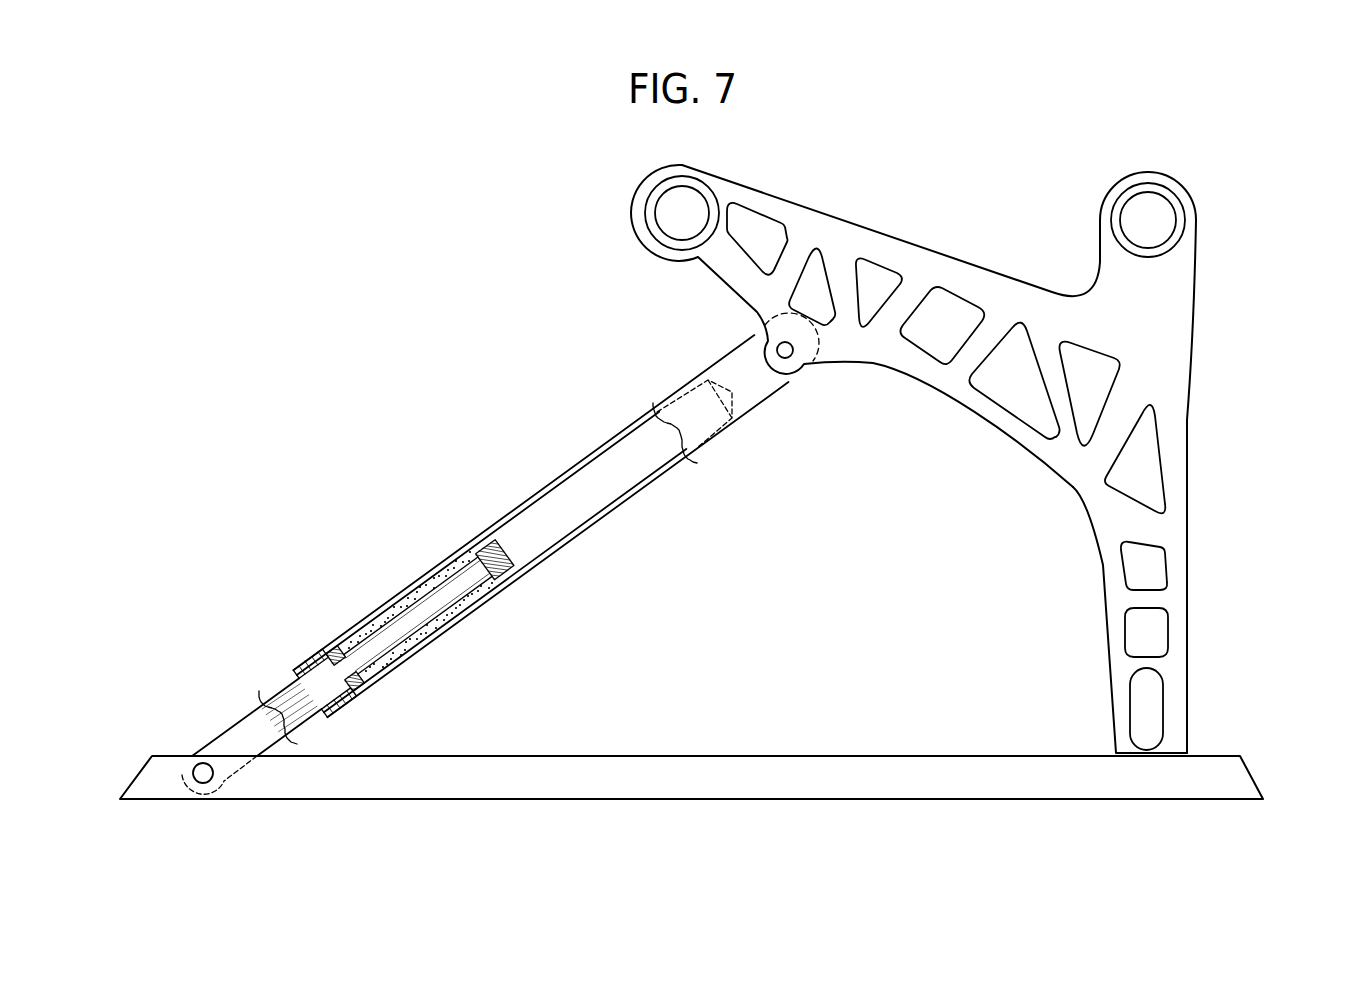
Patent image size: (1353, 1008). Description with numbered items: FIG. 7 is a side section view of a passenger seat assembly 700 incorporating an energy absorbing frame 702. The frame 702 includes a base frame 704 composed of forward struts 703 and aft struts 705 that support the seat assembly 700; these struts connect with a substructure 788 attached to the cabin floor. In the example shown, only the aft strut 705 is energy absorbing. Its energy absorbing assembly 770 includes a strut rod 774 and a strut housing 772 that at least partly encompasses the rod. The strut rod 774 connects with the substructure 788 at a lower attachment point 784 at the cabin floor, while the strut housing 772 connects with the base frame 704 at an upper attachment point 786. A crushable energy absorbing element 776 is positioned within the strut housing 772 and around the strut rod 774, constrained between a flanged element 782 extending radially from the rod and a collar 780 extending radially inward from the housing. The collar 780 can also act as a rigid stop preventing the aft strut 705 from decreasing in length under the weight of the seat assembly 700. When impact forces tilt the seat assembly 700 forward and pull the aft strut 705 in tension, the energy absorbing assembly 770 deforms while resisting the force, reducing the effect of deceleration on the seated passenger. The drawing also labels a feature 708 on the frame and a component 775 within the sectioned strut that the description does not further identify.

The passenger seat assembly 700 is at (931, 147).
The energy absorbing frame 702 is at (1224, 410).
The forward struts 703 is at (1097, 655).
The base frame 704 is at (1195, 307).
The aft strut 705 is at (663, 504).
The mounting bore 708 is at (1163, 213).
The energy absorbing assembly 770 is at (397, 557).
The strut housing 772 is at (490, 592).
The strut rod 774 is at (228, 727).
The upper elastomer band 775 is at (396, 618).
The energy absorbing element 776 is at (398, 650).
The collar 780 is at (335, 655).
The flanged element 782 is at (497, 555).
The lower attachment point 784 is at (190, 775).
The upper attachment point 786 is at (776, 350).
The substructure 788 is at (352, 787).